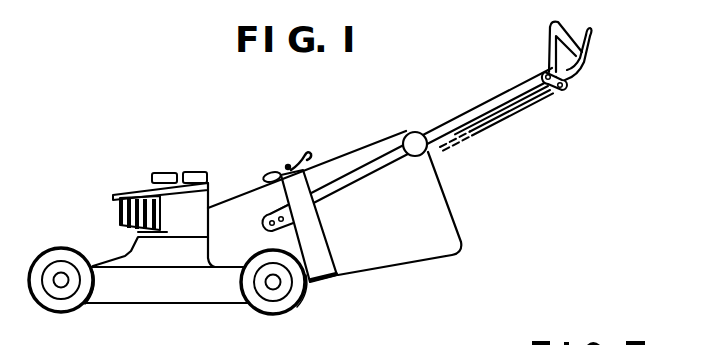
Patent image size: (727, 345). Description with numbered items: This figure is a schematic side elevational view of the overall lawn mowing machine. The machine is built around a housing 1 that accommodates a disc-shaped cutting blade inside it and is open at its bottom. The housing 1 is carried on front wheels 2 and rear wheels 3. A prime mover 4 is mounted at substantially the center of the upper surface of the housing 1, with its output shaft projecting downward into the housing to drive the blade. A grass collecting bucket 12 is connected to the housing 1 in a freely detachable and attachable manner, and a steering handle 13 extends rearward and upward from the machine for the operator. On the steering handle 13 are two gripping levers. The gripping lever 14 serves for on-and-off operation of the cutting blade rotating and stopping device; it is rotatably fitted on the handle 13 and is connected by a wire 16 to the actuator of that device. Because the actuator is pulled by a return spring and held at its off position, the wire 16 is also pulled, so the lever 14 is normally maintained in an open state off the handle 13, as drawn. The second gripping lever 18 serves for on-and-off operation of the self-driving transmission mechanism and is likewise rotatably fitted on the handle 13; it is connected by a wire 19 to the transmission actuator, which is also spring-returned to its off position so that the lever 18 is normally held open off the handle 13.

The housing 1 is at (177, 293).
The front wheels 2 is at (79, 311).
The rear wheels 3 is at (296, 291).
The prime mover 4 is at (193, 214).
The grass collecting bucket 12 is at (423, 247).
The steering handle 13 is at (546, 24).
The gripping lever 14 is at (590, 57).
The wire 16 is at (525, 110).
The gripping lever 18 is at (594, 40).
The wire 19 is at (485, 125).